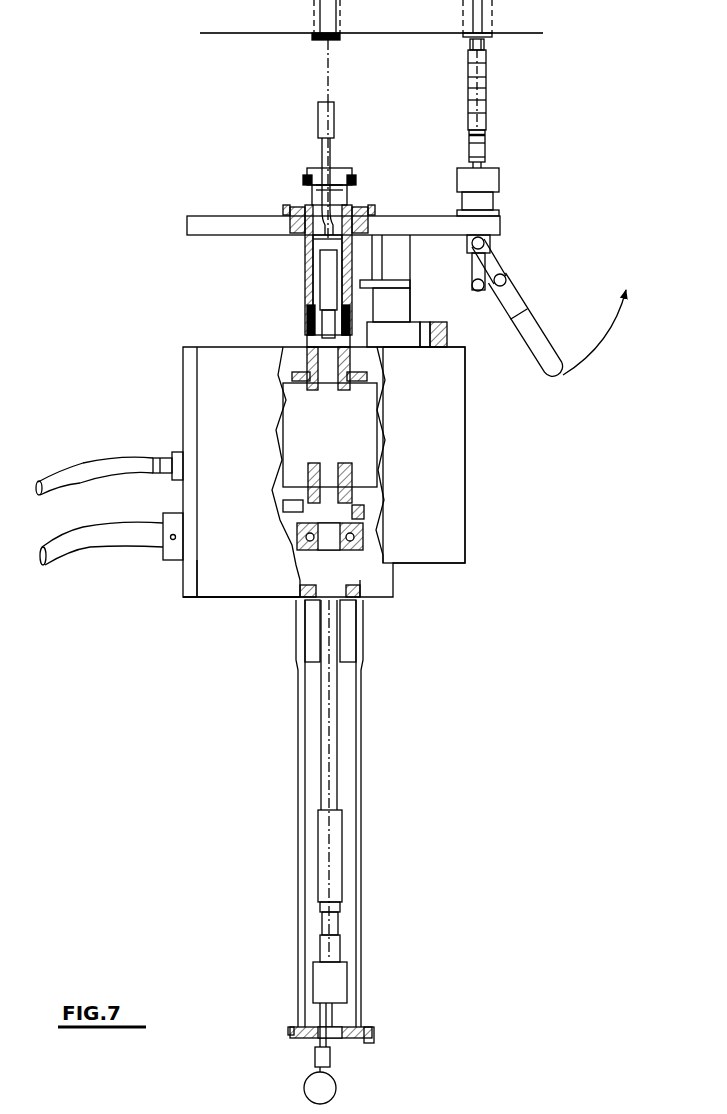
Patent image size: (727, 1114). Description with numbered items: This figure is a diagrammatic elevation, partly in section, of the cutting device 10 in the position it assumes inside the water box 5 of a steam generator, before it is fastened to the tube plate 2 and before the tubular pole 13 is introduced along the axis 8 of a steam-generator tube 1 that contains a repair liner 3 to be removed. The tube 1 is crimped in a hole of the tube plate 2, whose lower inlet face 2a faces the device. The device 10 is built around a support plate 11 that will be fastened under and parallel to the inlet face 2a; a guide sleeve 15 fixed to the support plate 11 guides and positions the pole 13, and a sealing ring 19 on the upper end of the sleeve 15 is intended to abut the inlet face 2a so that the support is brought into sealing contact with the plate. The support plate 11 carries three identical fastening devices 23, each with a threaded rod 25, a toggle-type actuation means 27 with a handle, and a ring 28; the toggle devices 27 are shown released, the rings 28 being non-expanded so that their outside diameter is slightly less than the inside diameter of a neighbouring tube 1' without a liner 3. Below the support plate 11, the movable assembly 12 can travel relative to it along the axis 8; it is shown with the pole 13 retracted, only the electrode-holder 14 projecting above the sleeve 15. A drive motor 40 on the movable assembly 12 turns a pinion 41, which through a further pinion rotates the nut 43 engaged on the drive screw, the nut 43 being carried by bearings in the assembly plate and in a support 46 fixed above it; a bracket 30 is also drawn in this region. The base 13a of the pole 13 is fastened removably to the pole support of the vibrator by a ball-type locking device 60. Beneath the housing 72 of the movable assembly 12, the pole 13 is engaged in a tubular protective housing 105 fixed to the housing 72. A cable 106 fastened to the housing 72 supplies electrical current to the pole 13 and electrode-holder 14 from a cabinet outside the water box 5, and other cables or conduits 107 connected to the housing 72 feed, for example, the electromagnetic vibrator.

The steam-generator tube 1 is at (308, 16).
The neighbouring tube 1' is at (490, 18).
The tube plate 2 is at (371, 16).
The inlet face 2a is at (232, 34).
The repair liner 3 is at (338, 41).
The water box 5 is at (513, 101).
The axis 8 is at (330, 77).
The device 10 is at (236, 766).
The support plate 11 is at (212, 218).
The movable assembly 12 is at (182, 403).
The tubular pole 13 is at (338, 750).
The pole end 13a is at (340, 977).
The electrode-holder 14 is at (340, 124).
The guide sleeve 15 is at (304, 258).
The sealing ring 19 is at (352, 176).
The fastening device 23 is at (502, 199).
The threaded rod 25 is at (494, 256).
The toggle-type actuation means 27 is at (518, 270).
The ring 28 is at (484, 108).
The support bracket 30 is at (410, 252).
The drive motor 40 is at (456, 437).
The pinion 41 is at (448, 338).
The nut 43 is at (410, 306).
The support 46 is at (410, 284).
The ball-type locking device 60 is at (370, 536).
The housing 72 is at (246, 575).
The tubular protective housing 105 is at (299, 858).
The cable 106 is at (83, 472).
The cables or conduits 107 is at (84, 540).